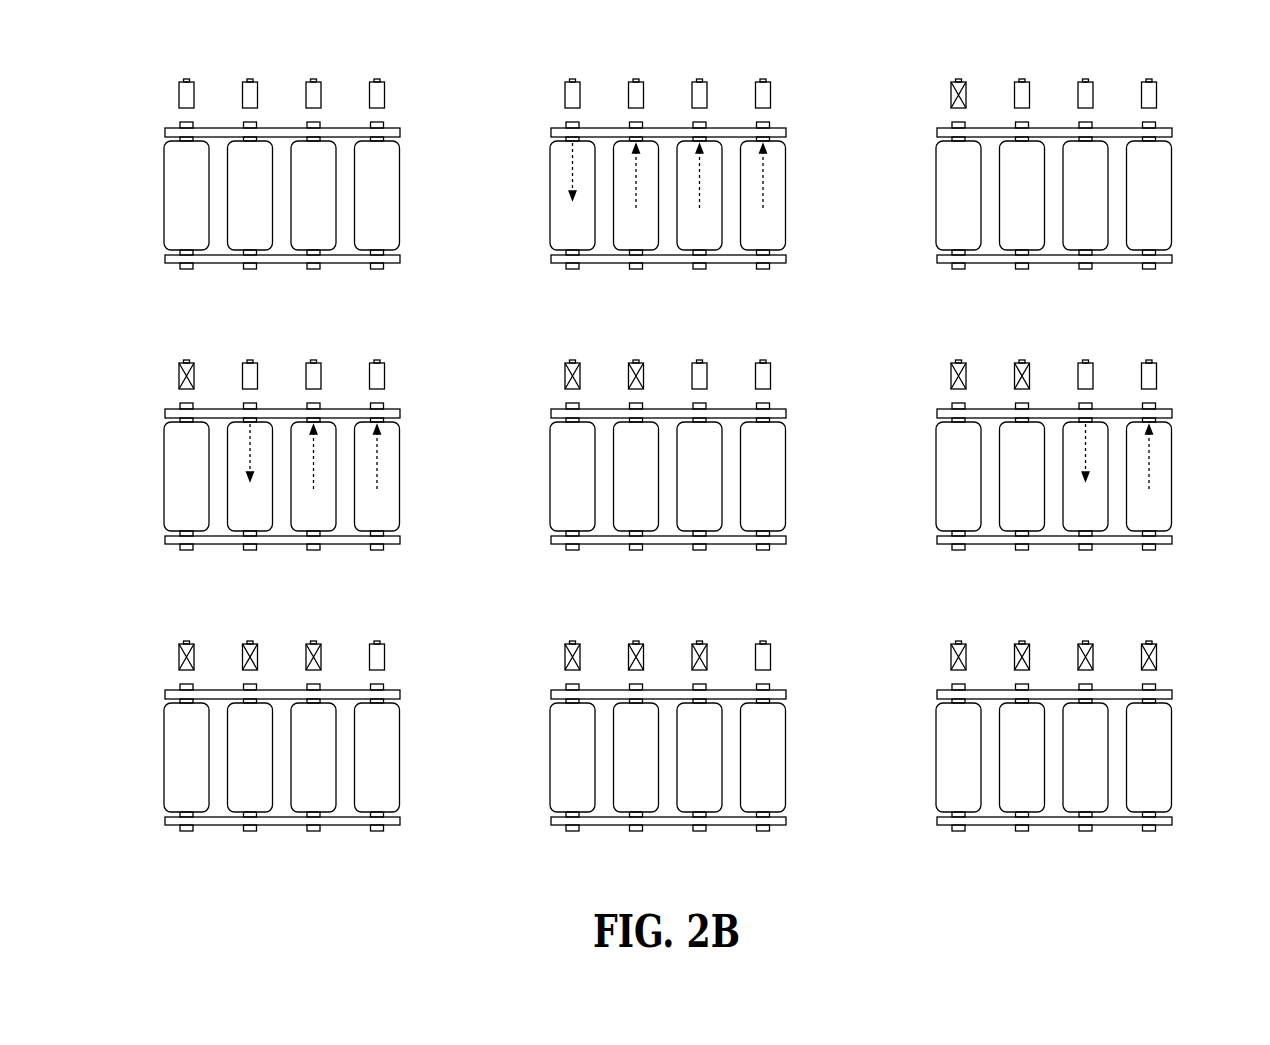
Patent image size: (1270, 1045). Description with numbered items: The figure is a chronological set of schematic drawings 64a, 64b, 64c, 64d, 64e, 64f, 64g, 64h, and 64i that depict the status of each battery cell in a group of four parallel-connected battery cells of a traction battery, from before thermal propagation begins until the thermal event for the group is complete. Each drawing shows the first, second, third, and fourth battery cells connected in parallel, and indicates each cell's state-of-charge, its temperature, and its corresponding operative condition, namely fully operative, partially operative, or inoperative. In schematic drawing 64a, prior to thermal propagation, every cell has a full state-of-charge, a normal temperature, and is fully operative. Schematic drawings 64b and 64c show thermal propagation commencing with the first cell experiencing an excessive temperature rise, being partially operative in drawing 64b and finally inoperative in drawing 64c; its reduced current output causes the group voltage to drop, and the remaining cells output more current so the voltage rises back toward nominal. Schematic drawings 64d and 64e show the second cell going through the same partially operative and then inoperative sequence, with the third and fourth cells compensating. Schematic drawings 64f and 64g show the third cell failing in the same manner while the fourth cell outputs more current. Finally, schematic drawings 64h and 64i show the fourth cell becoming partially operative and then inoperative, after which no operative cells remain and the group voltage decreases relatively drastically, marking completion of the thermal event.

The schematic drawing 64a is at (282, 165).
The schematic drawing 64b is at (668, 165).
The schematic drawing 64c is at (1054, 165).
The schematic drawing 64d is at (282, 446).
The schematic drawing 64e is at (668, 446).
The schematic drawing 64f is at (1054, 446).
The schematic drawing 64g is at (282, 727).
The schematic drawing 64h is at (668, 727).
The schematic drawing 64i is at (1054, 727).